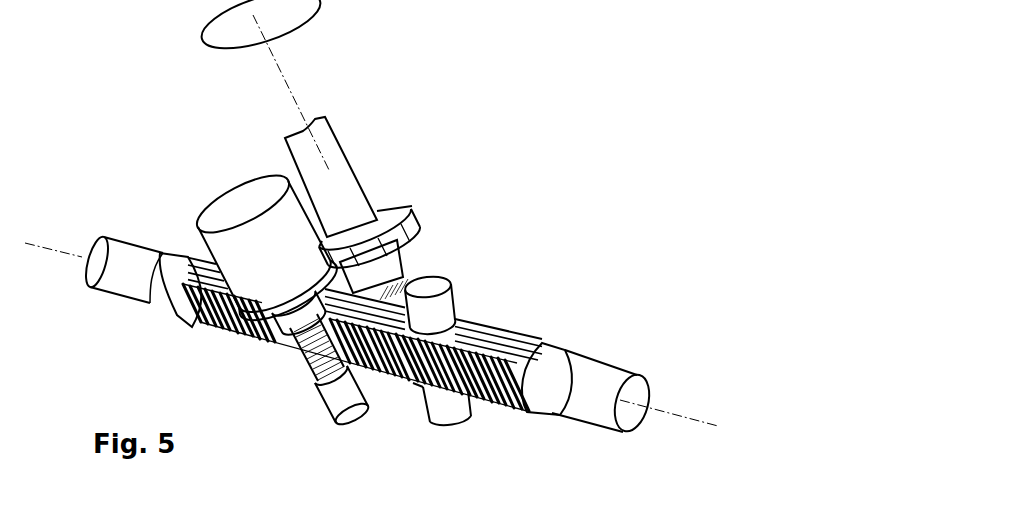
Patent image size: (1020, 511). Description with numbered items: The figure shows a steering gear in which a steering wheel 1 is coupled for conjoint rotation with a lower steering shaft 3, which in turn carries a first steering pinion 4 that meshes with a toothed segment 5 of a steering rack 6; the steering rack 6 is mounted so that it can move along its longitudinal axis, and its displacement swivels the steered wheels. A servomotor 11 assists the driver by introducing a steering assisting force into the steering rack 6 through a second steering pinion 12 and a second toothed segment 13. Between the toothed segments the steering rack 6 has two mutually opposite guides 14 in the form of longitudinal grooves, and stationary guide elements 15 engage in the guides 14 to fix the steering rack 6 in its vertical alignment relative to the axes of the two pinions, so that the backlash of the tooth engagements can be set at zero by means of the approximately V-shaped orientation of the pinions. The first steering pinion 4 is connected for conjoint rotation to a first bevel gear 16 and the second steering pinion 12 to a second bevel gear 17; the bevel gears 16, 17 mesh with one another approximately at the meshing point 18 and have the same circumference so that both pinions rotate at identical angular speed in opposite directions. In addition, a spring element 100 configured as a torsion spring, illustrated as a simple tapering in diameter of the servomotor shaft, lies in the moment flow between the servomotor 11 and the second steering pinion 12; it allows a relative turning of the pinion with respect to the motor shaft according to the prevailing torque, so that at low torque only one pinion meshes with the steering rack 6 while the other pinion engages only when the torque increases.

The steering wheel 1 is at (320, 5).
The lower steering shaft 3 is at (327, 152).
The first steering pinion 4 is at (395, 280).
The toothed segment 5 is at (547, 348).
The steering rack 6 is at (548, 368).
The servomotor 11 is at (250, 233).
The second steering pinion 12 is at (330, 402).
The second toothed segment 13 is at (508, 407).
The guides 14 is at (525, 345).
The guide elements 15 is at (452, 407).
The first bevel gear 16 is at (407, 202).
The second bevel gear 17 is at (200, 322).
The meshing point of the bevel gears 18 is at (325, 242).
The spring element 100 is at (270, 342).